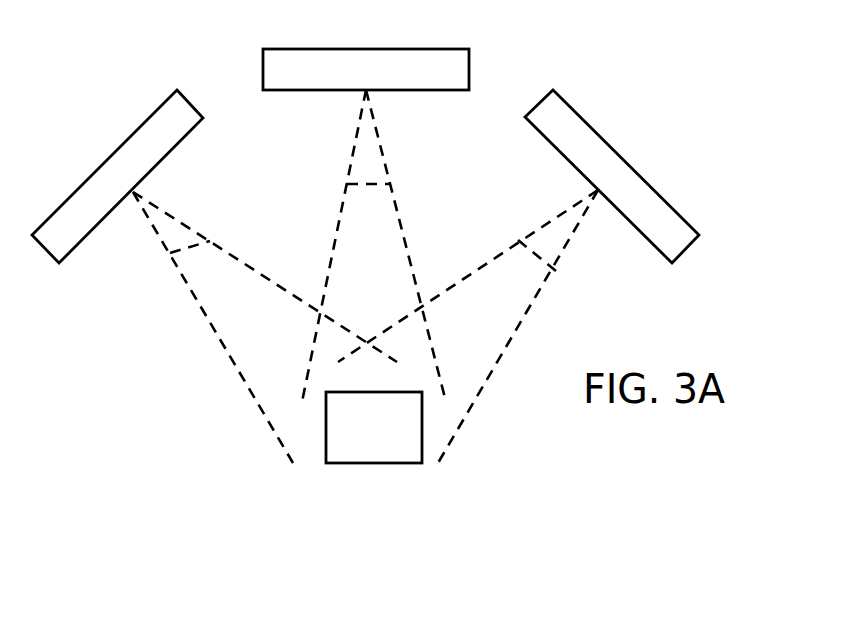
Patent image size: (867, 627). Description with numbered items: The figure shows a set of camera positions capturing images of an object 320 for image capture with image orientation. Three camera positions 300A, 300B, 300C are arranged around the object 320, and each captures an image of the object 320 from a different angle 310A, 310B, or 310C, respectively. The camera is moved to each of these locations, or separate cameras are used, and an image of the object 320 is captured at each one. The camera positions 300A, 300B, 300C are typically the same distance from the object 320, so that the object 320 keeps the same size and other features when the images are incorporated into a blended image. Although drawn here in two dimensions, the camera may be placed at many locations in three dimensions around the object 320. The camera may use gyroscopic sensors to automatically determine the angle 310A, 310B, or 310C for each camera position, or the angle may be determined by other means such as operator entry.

The camera position 300A is at (142, 125).
The camera position 300B is at (470, 68).
The camera position 300C is at (657, 189).
The angle 310A is at (167, 252).
The angle 310B is at (355, 145).
The angle 310C is at (540, 230).
The object 320 is at (374, 427).